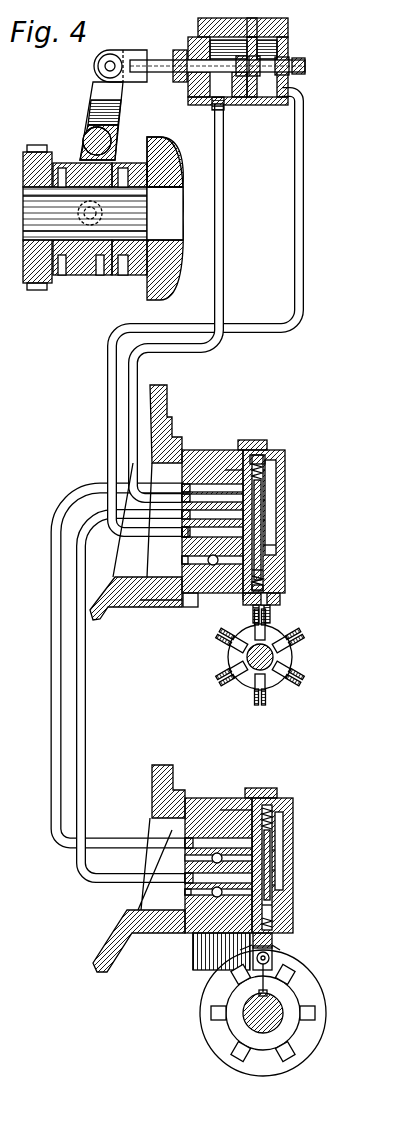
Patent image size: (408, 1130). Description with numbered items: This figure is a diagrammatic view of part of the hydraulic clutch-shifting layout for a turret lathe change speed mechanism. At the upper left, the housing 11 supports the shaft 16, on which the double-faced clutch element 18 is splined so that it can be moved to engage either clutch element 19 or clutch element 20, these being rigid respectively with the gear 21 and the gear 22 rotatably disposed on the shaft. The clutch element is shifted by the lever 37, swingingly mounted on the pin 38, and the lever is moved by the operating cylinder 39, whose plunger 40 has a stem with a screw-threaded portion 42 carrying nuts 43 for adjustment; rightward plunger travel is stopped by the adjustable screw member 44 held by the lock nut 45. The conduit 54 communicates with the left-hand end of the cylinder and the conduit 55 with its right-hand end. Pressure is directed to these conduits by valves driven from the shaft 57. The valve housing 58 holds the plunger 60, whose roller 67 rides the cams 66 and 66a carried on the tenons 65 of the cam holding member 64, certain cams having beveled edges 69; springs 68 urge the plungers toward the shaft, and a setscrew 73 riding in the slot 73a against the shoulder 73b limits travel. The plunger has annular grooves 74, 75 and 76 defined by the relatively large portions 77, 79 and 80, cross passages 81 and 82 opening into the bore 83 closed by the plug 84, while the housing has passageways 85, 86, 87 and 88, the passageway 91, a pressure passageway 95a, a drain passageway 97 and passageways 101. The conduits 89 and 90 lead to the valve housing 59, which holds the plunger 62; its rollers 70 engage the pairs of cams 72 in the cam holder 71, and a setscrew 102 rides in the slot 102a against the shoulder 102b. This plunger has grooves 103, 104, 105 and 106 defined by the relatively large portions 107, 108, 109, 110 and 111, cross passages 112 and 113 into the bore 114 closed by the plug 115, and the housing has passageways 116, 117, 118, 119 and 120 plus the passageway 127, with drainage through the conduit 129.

The housing 11 is at (165, 395).
The shaft 16 is at (168, 209).
The double-faced clutch element 18 is at (92, 266).
The clutch element 19 is at (58, 165).
The clutch element 20 is at (141, 163).
The gear 21 is at (40, 152).
The gear 22 is at (168, 150).
The lever 37 is at (100, 103).
The pin 38 is at (84, 125).
The operating cylinder 39 is at (280, 28).
The plunger 40 is at (238, 104).
The screw-threaded portion 42 is at (252, 20).
The nuts 43 is at (234, 82).
The adjustable screw member 44 is at (305, 66).
The lock nut 45 is at (282, 62).
The conduit 54 is at (226, 180).
The conduit 55 is at (306, 168).
The shaft 57 is at (228, 660).
The valve housing 58 is at (198, 798).
The valve housing 59 is at (196, 450).
The plunger 60 is at (272, 958).
The plunger 62 is at (280, 600).
The cam holding member 64 is at (225, 1033).
The tenons 65 is at (318, 1023).
The cam 66 is at (212, 1013).
The cam 66a is at (312, 1000).
The roller 67 is at (268, 968).
The springs 68 is at (266, 440).
The beveled edges 69 is at (238, 1058).
The rollers 70 is at (271, 614).
The cam holder 71 is at (236, 672).
The cams 72 is at (224, 638).
The setscrew 73 is at (272, 938).
The slot 73a is at (274, 946).
The shoulder 73b is at (240, 950).
The annular groove 74 is at (276, 918).
The annular groove 75 is at (283, 870).
The annular groove 76 is at (272, 825).
The relatively large portion 77 is at (221, 951).
The relatively large portion 79 is at (283, 855).
The relatively large portion 80 is at (283, 818).
The cross passage 81 is at (272, 905).
The cross passage 82 is at (270, 845).
The bore 83 is at (283, 885).
The plug 84 is at (246, 835).
The passageway 85 is at (216, 853).
The passageway 86 is at (190, 847).
The passageway 87 is at (187, 882).
The passageway 88 is at (187, 894).
The conduit 89 is at (52, 738).
The conduit 90 is at (87, 758).
The passageway 91 is at (163, 58).
The passageway 95a is at (236, 808).
The passageway 97 is at (198, 945).
The passageways 101 is at (285, 798).
The setscrew 102 is at (270, 588).
The slot 102a is at (267, 604).
The shoulder 102b is at (270, 580).
The annular groove 103 is at (270, 572).
The annular groove 104 is at (276, 510).
The annular groove 105 is at (276, 495).
The annular groove 106 is at (263, 470).
The relatively large portion 107 is at (240, 594).
The relatively large portion 108 is at (268, 548).
The relatively large portion 109 is at (218, 550).
The relatively large portion 110 is at (225, 469).
The relatively large portion 111 is at (232, 526).
The cross passage 112 is at (276, 518).
The cross passage 113 is at (228, 508).
The bore 114 is at (262, 490).
The plug 115 is at (244, 450).
The passageway 116 is at (168, 605).
The passageway 117 is at (182, 559).
The passageway 118 is at (182, 533).
The passageway 119 is at (199, 494).
The passageway 120 is at (204, 484).
The passageway 127 is at (265, 458).
The conduit 129 is at (200, 607).